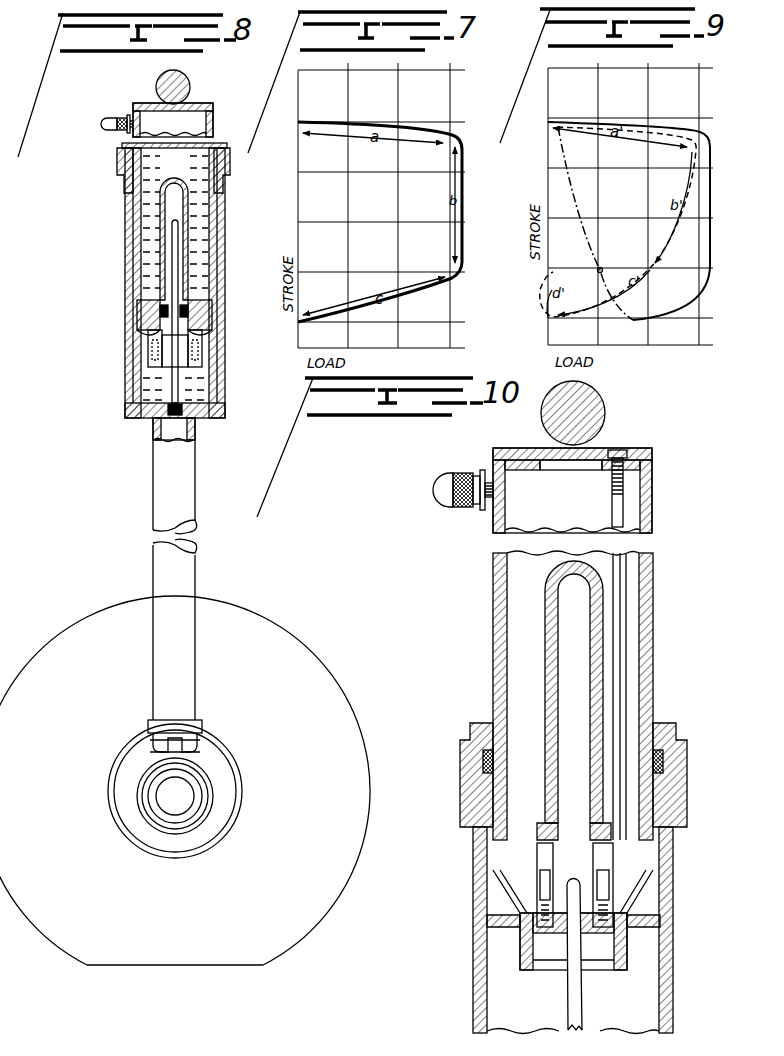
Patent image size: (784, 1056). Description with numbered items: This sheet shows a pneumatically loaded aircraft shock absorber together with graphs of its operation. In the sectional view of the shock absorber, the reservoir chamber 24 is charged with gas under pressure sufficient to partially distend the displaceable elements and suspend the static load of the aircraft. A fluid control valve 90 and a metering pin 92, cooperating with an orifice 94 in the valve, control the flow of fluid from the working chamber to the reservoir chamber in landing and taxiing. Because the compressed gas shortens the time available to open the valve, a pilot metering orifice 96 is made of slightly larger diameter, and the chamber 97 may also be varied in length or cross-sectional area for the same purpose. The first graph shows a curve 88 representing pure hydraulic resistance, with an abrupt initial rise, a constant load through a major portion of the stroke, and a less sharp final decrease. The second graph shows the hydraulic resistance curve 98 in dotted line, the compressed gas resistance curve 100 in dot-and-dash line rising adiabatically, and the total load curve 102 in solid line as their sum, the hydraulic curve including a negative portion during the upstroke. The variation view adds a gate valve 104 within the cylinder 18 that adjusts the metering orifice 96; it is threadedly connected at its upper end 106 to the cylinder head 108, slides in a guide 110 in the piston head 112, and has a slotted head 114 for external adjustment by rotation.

In FIG. 10, the cylinder 18 is at (662, 668).
In FIG. 8, the reservoir chamber 24 is at (157, 120).
In FIG. 7, the curve 88 is at (460, 180).
In FIG. 8, the fluid control valve 90 is at (197, 300).
In FIG. 10, the fluid control valve 90 is at (530, 833).
In FIG. 8, the metering pin 92 is at (178, 388).
In FIG. 8, the orifice 94 is at (170, 363).
In FIG. 8, the pilot metering orifice 96 is at (212, 343).
In FIG. 10, the pilot metering orifice 96 is at (630, 927).
In FIG. 8, the chamber 97 is at (153, 350).
In FIG. 9, the hydraulic resistance curve 98 is at (692, 182).
In FIG. 9, the compressed gas resistance curve 100 is at (578, 211).
In FIG. 9, the total load curve 102 is at (695, 288).
In FIG. 10, the gate valve 104 is at (620, 913).
In FIG. 10, the upper end 106 is at (628, 458).
In FIG. 10, the cylinder head 108 is at (530, 430).
In FIG. 10, the guide 110 is at (633, 900).
In FIG. 10, the piston head 112 is at (627, 858).
In FIG. 10, the slotted head 114 is at (620, 450).